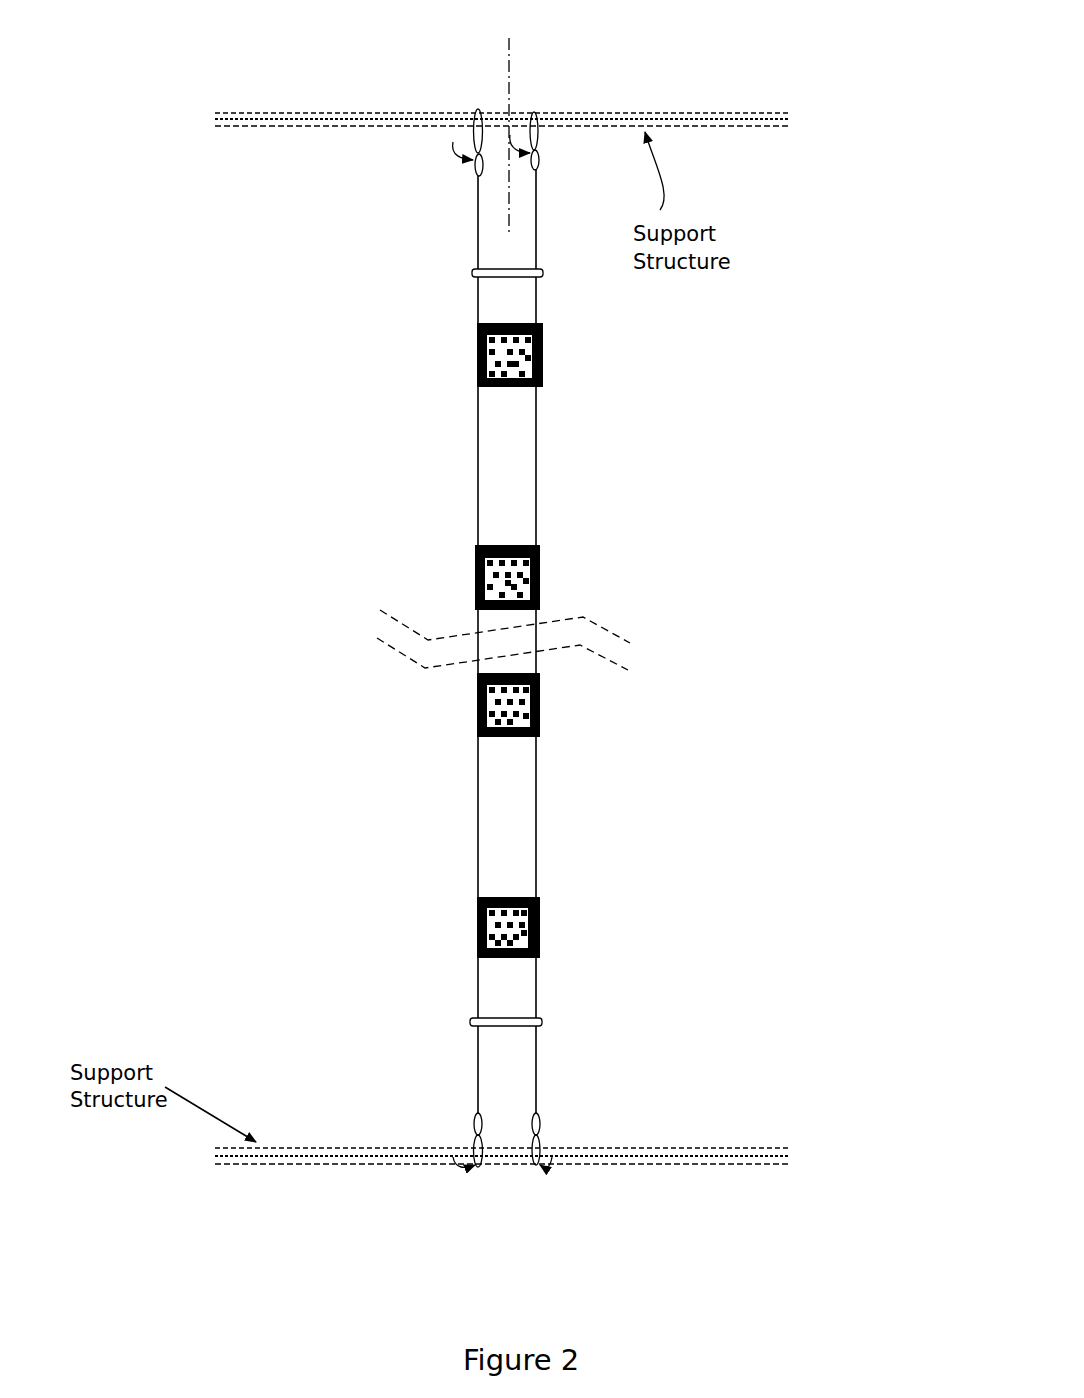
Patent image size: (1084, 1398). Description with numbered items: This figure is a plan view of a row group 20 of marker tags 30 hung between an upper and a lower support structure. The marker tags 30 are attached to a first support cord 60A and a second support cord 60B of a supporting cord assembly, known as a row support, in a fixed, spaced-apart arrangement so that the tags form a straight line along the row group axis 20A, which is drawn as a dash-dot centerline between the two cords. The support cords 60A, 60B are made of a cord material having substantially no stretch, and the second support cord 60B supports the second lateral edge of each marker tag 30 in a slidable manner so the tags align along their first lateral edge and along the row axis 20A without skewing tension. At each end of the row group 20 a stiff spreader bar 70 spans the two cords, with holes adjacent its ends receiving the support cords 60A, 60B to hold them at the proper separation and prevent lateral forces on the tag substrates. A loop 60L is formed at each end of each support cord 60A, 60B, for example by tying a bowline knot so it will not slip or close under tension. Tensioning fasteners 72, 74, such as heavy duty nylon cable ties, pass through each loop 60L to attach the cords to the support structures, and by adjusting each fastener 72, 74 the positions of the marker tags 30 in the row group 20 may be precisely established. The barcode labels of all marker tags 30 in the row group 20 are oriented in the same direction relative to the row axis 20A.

The row group 20 is at (764, 557).
The row group axis 20A is at (513, 67).
The marker tag 30 is at (468, 363).
The first support cord 60A is at (476, 808).
The second support cord 60B is at (541, 808).
The loop 60L is at (475, 167).
The spreader bar 70 is at (460, 274).
The tensioning fastener 72 is at (543, 1160).
The tensioning fastener 74 is at (545, 136).